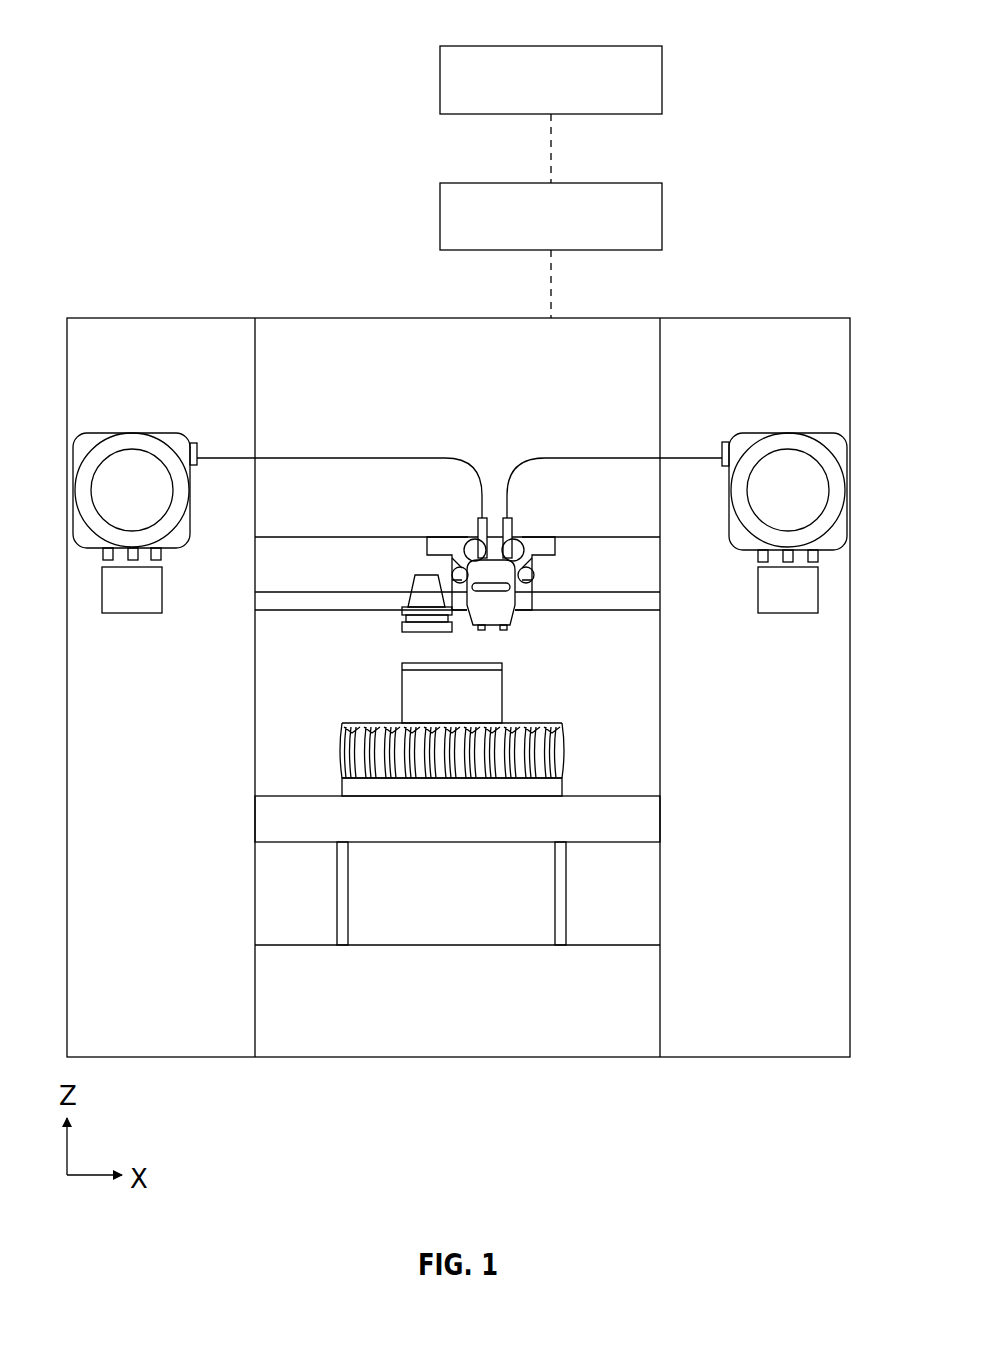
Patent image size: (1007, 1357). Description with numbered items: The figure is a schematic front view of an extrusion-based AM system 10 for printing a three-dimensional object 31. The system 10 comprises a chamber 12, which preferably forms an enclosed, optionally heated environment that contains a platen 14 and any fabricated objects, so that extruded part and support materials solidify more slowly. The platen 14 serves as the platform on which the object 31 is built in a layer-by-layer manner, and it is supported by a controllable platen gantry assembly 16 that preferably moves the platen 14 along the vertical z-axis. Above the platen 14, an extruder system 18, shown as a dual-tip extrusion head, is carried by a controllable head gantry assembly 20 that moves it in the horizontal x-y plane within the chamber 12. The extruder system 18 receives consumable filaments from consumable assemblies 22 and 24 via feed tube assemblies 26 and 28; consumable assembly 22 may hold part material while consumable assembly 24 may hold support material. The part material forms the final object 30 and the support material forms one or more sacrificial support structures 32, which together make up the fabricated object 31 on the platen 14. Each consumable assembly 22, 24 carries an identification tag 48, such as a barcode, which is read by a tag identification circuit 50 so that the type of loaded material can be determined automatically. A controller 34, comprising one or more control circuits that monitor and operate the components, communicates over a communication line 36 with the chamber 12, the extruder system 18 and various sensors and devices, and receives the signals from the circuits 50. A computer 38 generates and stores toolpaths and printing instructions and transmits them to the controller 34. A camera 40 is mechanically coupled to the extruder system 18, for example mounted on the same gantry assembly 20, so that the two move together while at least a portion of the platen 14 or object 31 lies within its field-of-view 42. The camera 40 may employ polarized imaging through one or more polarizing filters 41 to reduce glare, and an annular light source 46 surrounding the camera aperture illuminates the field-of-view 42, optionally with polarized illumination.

The AM system 10 is at (110, 34).
The chamber 12 is at (252, 739).
The platen 14 is at (664, 828).
The platen gantry assembly 16 is at (574, 926).
The extruder system 18 is at (542, 574).
The head gantry assembly 20 is at (318, 584).
The consumable assembly 22 is at (140, 433).
The consumable assembly 24 is at (783, 433).
The feed tube assembly 26 is at (297, 458).
The feed tube assembly 28 is at (690, 457).
The final object 30 is at (410, 678).
The 3D object 31 is at (556, 709).
The sacrificial support structure 32 is at (562, 788).
The controller 34 is at (664, 218).
The communication line 36 is at (556, 292).
The computer 38 is at (664, 82).
The camera 40 is at (425, 572).
The polarizing filter 41 is at (402, 616).
The field-of-view 42 is at (440, 660).
The light source 46 is at (455, 622).
The identification tag 48 is at (163, 553).
The tag identification circuit 50 is at (460, 590).